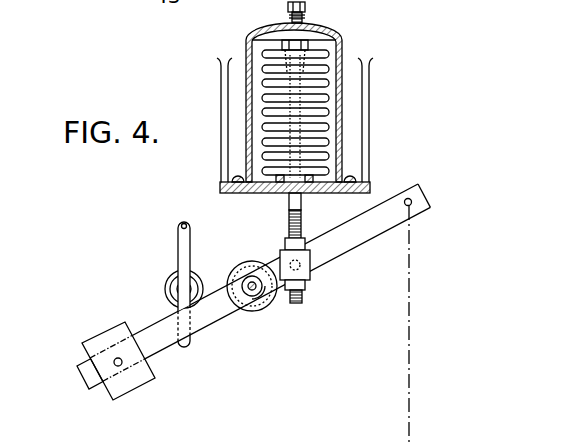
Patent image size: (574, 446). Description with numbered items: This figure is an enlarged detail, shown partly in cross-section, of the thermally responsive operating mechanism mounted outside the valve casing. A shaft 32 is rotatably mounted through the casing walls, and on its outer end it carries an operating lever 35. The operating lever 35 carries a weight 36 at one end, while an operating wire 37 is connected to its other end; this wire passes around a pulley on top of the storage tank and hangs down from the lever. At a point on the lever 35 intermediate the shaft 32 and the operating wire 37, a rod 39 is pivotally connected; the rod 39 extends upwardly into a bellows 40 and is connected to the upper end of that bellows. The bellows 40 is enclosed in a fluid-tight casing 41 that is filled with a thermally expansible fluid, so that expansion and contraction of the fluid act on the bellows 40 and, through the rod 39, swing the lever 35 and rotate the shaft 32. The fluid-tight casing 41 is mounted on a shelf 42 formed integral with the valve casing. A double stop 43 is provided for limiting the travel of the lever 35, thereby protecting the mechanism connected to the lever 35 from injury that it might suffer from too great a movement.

The shaft 32 is at (254, 311).
The operating lever 35 is at (357, 240).
The weight 36 is at (82, 343).
The operating wire 37 is at (410, 359).
The rod 39 is at (288, 218).
The bellows 40 is at (268, 52).
The fluid-tight casing 41 is at (343, 48).
The shelf 42 is at (221, 188).
The double stop 43 is at (178, 250).